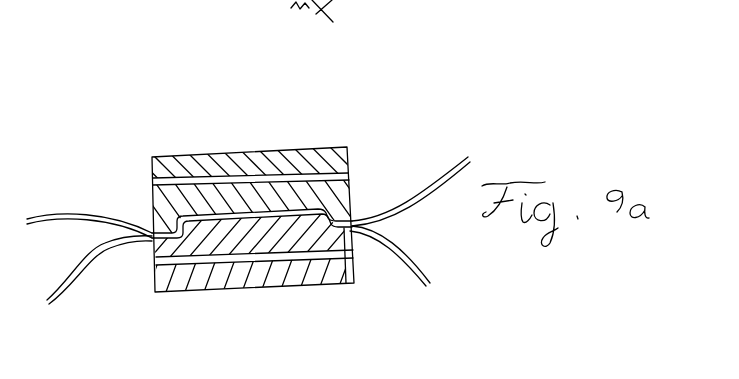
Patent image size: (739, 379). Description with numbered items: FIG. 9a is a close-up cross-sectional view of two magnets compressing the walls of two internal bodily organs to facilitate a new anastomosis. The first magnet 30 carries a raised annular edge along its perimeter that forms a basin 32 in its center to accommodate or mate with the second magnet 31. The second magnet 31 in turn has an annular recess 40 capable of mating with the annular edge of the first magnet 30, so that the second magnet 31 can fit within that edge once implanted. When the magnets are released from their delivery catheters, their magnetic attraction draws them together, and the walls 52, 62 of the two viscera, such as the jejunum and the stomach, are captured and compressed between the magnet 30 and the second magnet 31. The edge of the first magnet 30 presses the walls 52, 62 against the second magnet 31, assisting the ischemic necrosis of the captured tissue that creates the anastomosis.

The magnet 30 is at (323, 127).
The second magnet 31 is at (247, 310).
The basin 32 is at (232, 210).
The annular recess 40 is at (350, 281).
The wall 52 is at (67, 293).
The wall 62 is at (80, 212).